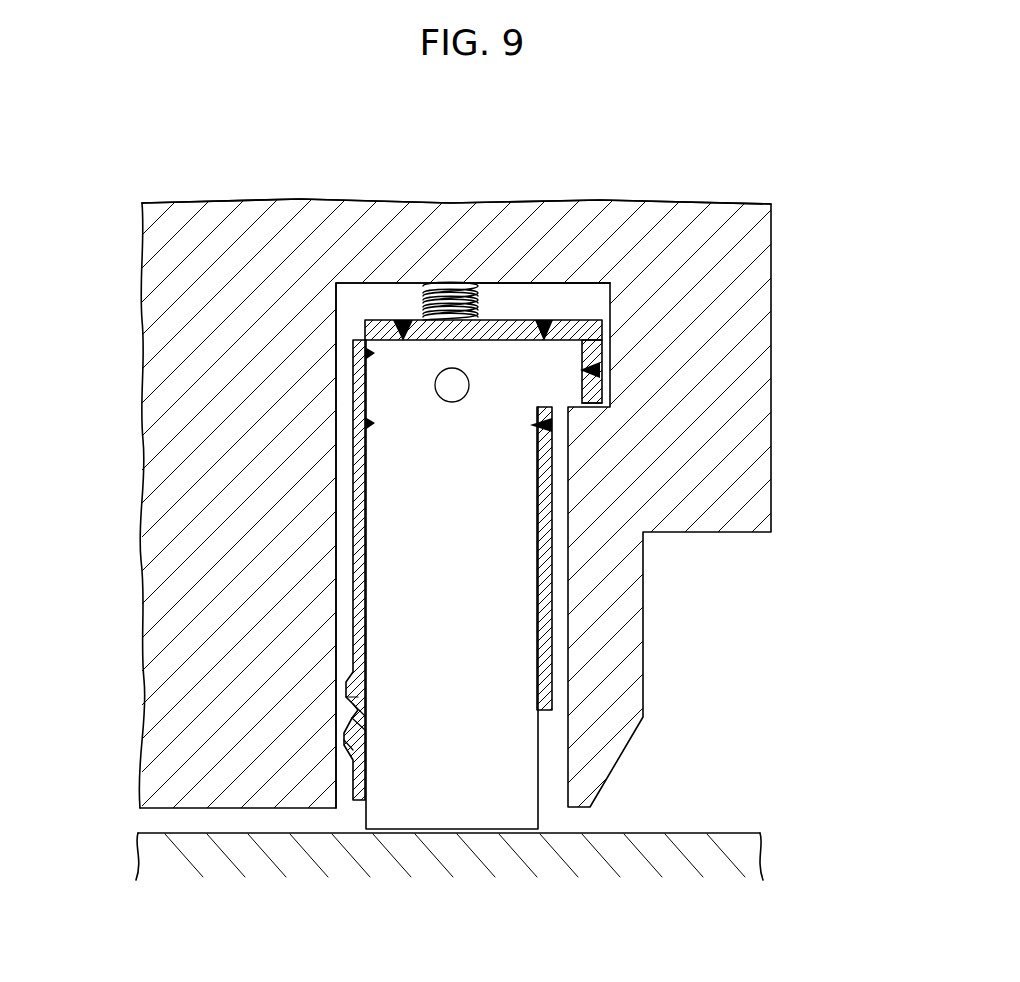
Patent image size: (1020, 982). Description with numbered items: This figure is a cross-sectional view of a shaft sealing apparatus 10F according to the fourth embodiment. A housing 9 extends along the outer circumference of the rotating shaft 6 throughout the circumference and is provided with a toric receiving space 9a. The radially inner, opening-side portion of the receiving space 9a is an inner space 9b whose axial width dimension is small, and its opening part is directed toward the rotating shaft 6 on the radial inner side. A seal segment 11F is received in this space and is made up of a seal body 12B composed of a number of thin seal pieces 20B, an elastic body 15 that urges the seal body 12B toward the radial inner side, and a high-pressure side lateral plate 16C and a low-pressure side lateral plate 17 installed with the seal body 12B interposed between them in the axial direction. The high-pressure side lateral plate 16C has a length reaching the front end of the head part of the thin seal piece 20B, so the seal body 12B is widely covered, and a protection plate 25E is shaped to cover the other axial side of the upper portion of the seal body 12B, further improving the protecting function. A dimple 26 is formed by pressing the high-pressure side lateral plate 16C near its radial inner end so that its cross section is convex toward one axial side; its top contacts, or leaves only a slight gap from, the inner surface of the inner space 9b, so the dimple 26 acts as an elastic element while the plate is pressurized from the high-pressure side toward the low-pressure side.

The housing 9 is at (750, 272).
The receiving space 9a is at (393, 307).
The inner space 9b is at (343, 390).
The shaft sealing apparatus 10F is at (731, 189).
The seal segment 11F is at (490, 307).
The seal body 12B is at (568, 341).
The elastic body 15 is at (445, 290).
The high-pressure side lateral plate 16C is at (357, 580).
The low-pressure side lateral plate 17 is at (546, 618).
The thin seal piece 20B is at (505, 767).
The protection plate 25E is at (598, 339).
The dimple 26 is at (340, 715).
The rotating shaft 6 is at (738, 833).